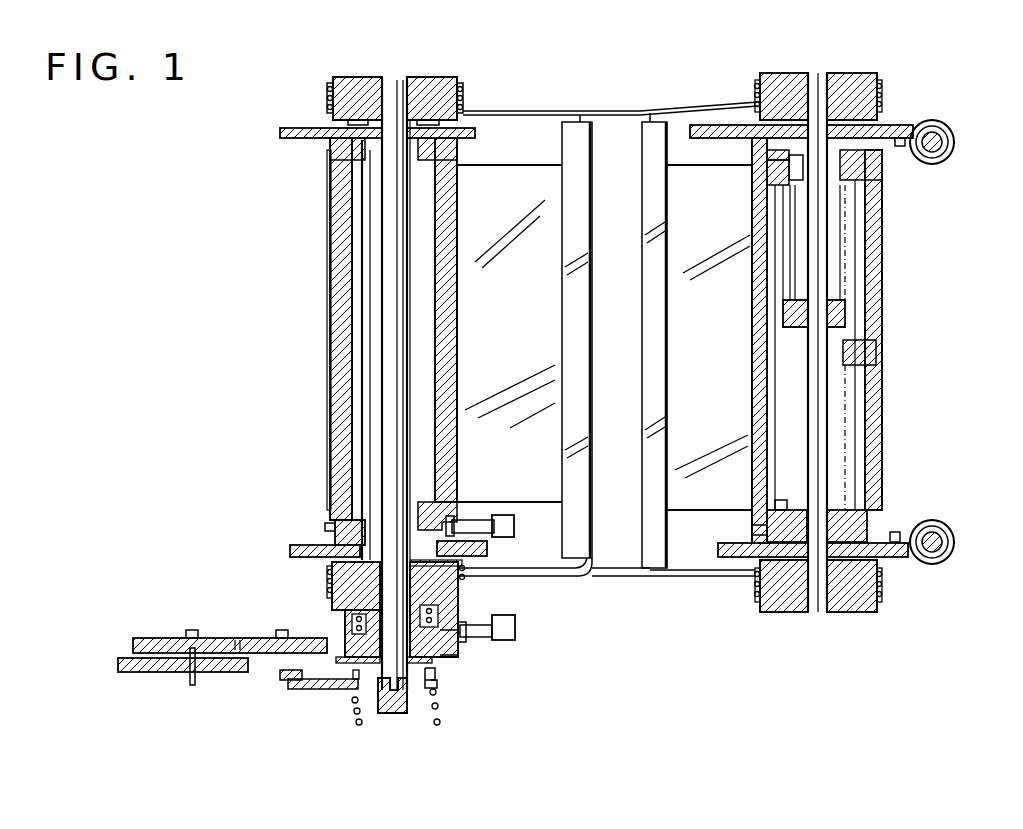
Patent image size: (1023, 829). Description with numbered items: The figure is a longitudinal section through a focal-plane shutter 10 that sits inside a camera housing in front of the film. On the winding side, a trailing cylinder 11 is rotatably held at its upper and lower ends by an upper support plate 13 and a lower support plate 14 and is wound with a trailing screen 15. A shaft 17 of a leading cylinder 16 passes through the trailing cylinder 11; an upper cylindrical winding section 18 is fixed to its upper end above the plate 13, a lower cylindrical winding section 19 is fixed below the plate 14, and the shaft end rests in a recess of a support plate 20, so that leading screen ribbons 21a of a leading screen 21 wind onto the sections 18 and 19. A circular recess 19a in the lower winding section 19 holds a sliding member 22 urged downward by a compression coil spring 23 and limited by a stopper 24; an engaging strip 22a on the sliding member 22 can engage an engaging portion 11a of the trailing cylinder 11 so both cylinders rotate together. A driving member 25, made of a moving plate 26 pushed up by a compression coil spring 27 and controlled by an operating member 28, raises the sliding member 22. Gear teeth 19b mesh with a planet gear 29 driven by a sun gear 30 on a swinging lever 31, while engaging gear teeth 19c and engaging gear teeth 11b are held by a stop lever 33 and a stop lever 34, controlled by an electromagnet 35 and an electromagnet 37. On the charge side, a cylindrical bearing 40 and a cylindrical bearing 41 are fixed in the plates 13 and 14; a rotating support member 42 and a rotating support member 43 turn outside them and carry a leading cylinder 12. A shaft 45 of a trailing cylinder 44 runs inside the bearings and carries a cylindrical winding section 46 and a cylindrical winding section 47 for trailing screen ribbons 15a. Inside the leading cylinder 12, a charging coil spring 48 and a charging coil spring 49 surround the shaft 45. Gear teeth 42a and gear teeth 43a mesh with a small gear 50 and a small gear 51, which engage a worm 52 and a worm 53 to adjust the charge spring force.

The focal-plane shutter 10 is at (588, 83).
The trailing cylinder 11 is at (457, 231).
The engaging portion 11a is at (435, 510).
The engaging gear teeth 11b is at (330, 530).
The leading cylinder 12 is at (882, 288).
The upper support plate 13 is at (466, 135).
The lower support plate 14 is at (480, 551).
The trailing screen 15 is at (556, 305).
The trailing screen ribbons 15a is at (691, 109).
The leading cylinder 16 is at (369, 77).
The shaft 17 is at (396, 300).
The cylindrical winding section 18 is at (423, 79).
The cylindrical winding section 19 is at (448, 588).
The circular recess 19a is at (438, 672).
The gear teeth 19b is at (452, 646).
The engaging gear teeth 19c is at (463, 616).
The support plate 20 is at (390, 713).
The leading screen 21 is at (670, 381).
The leading screen ribbons 21a is at (508, 111).
The sliding member 22 is at (348, 634).
The engaging strip 22a is at (462, 565).
The compression coil spring 23 is at (330, 594).
The stopper 24 is at (440, 680).
The driving member 25 is at (339, 714).
The moving plate 26 is at (317, 689).
The compression coil spring 27 is at (358, 724).
The operating member 28 is at (294, 670).
The planet gear 29 is at (268, 654).
The sun gear 30 is at (155, 639).
The swinging lever 31 is at (215, 638).
The stop lever 33 is at (494, 638).
The stop lever 34 is at (480, 522).
The electromagnet 35 is at (515, 627).
The electromagnet 37 is at (505, 517).
The cylindrical bearing 40 is at (760, 177).
The cylindrical bearing 41 is at (768, 538).
The rotating support member 42 is at (768, 186).
The gear teeth 42a is at (765, 154).
The rotating support member 43 is at (766, 512).
The gear teeth 43a is at (752, 538).
The trailing cylinder 44 is at (818, 67).
The shaft 45 is at (840, 245).
The cylindrical winding section 46 is at (850, 75).
The cylindrical winding section 47 is at (841, 607).
The charging coil spring 48 is at (856, 202).
The charging coil spring 49 is at (856, 411).
The small gear 50 is at (903, 135).
The small gear 51 is at (902, 530).
The worm 52 is at (950, 133).
The worm 53 is at (937, 524).